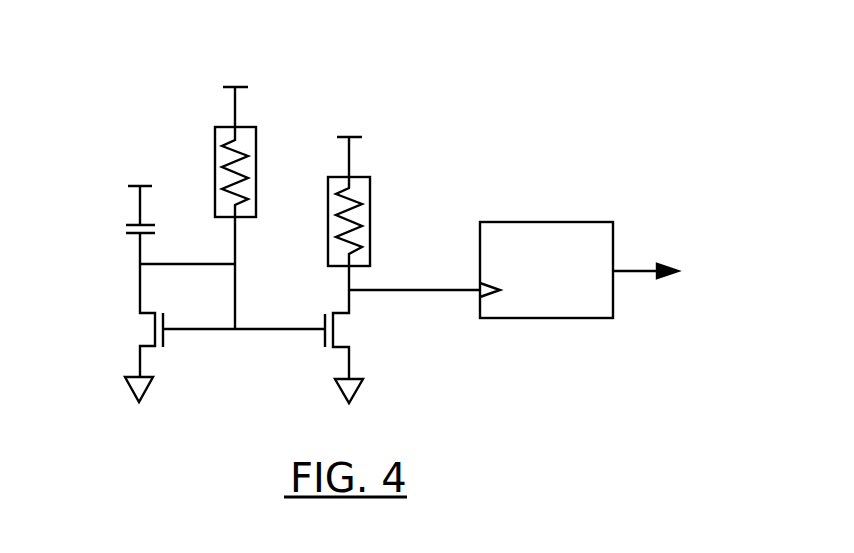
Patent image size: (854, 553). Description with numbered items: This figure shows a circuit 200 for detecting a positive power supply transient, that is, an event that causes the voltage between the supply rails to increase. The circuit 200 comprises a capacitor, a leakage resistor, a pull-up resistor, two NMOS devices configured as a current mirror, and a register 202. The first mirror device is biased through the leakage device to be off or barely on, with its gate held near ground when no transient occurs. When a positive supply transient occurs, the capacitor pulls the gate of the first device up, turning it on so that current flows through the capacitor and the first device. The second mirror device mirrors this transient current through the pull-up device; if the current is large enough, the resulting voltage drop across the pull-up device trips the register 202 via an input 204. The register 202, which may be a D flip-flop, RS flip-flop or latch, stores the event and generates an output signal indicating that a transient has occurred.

The circuit 200 is at (110, 40).
The register 202 is at (560, 221).
The input 204 is at (483, 293).